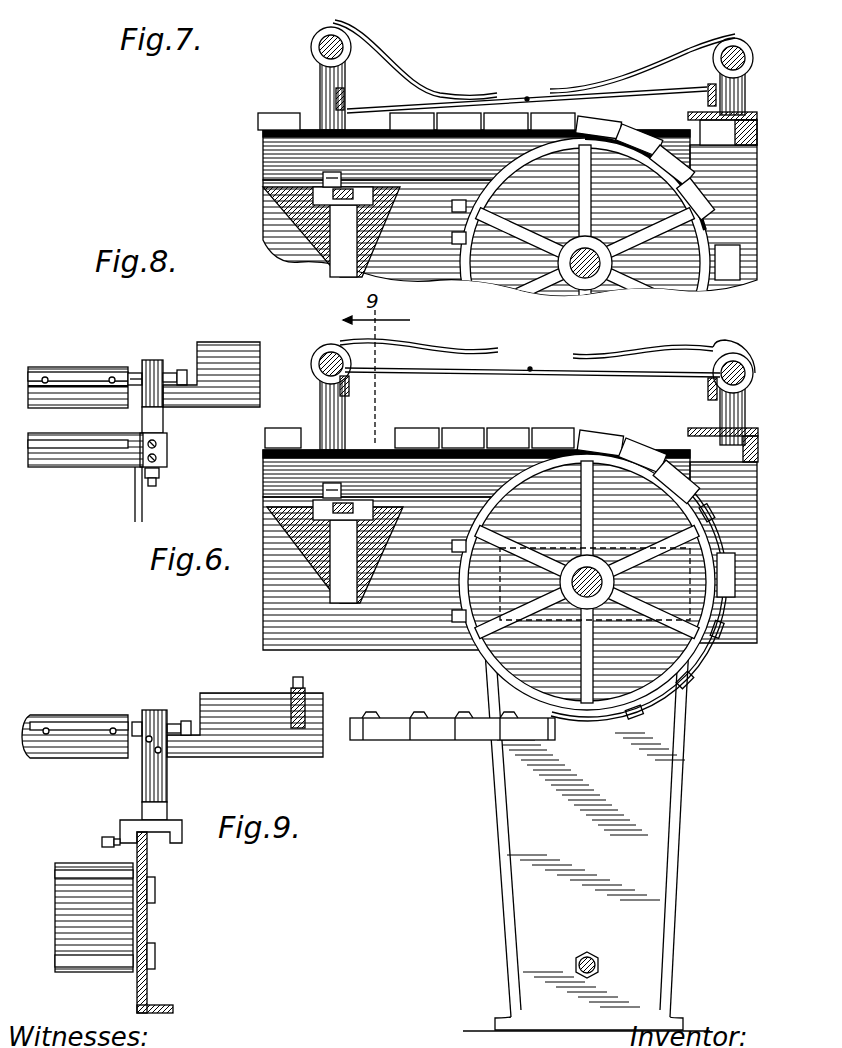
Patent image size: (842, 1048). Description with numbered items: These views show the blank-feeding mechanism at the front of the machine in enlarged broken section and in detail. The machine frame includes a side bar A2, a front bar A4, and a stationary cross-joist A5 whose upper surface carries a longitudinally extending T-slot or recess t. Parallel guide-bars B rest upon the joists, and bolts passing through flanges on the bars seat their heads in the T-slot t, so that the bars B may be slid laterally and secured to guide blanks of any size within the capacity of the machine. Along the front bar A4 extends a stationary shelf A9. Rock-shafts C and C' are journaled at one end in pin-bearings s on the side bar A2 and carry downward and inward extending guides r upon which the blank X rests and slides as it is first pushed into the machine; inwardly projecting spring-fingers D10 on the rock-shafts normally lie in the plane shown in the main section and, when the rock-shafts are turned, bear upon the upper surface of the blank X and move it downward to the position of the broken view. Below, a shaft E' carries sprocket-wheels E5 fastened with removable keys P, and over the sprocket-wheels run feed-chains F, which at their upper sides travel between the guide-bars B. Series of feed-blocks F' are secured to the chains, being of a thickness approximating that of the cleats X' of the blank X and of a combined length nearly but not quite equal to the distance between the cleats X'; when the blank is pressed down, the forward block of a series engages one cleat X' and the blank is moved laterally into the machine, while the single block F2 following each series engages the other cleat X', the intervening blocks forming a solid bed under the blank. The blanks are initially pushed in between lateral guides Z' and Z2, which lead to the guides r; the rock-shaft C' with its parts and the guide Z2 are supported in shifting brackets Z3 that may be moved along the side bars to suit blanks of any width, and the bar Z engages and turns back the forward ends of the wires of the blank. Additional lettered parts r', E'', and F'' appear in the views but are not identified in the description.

In FIG. 7, the guide-bar B is at (268, 155).
In FIG. 6, the guide-bar B is at (310, 458).
In FIG. 7, the side bar A2 is at (742, 188).
In FIG. 6, the side bar A2 is at (365, 632).
In FIG. 8, the side bar A2 is at (140, 500).
In FIG. 9, the side bar A2 is at (148, 918).
In FIG. 7, the front bar A4 is at (752, 136).
In FIG. 8, the front bar A4 is at (108, 468).
In FIG. 7, the cross-joist A5 is at (358, 220).
In FIG. 6, the cross-joist A5 is at (320, 560).
In FIG. 9, the cross-joist A5 is at (73, 868).
In FIG. 7, the stationary shelf A9 is at (745, 113).
In FIG. 6, the stationary shelf A9 is at (723, 445).
In FIG. 8, the stationary shelf A9 is at (70, 445).
In FIG. 7, the rock-shaft C is at (747, 76).
In FIG. 6, the rock-shaft C is at (747, 399).
In FIG. 8, the rock-shaft C is at (78, 373).
In FIG. 7, the rock-shaft C' is at (316, 70).
In FIG. 6, the rock-shaft C' is at (315, 391).
In FIG. 9, the rock-shaft C' is at (75, 723).
In FIG. 7, the guide r is at (526, 84).
In FIG. 6, the guide r is at (351, 399).
In FIG. 8, the guide r is at (69, 415).
In FIG. 9, the guide r is at (59, 774).
In FIG. 6, the pulley bracket r' is at (697, 400).
In FIG. 7, the blank X is at (516, 85).
In FIG. 6, the blank X is at (518, 357).
In FIG. 7, the cleat X' is at (527, 114).
In FIG. 6, the cleat X' is at (532, 386).
In FIG. 7, the spring-finger D10 is at (449, 88).
In FIG. 6, the spring-finger D10 is at (462, 352).
In FIG. 7, the shaft E' is at (581, 263).
In FIG. 6, the shaft E' is at (583, 582).
In FIG. 6, the wheel blocks E'' is at (482, 451).
In FIG. 7, the sprocket-wheel E5 is at (440, 236).
In FIG. 6, the sprocket-wheel E5 is at (665, 682).
In FIG. 7, the removable key P is at (578, 255).
In FIG. 6, the removable key P is at (590, 570).
In FIG. 7, the T-slot t is at (380, 157).
In FIG. 6, the T-slot t is at (352, 495).
In FIG. 6, the feed-chain F is at (452, 716).
In FIG. 6, the feed-block F' is at (450, 759).
In FIG. 7, the track block F'' is at (486, 161).
In FIG. 7, the single block F2 is at (728, 258).
In FIG. 6, the single block F2 is at (738, 575).
In FIG. 8, the pin-bearing s is at (138, 370).
In FIG. 9, the pin-bearing s is at (140, 718).
In FIG. 9, the bar Z is at (283, 695).
In FIG. 8, the lateral guide Z' is at (211, 360).
In FIG. 9, the lateral guide Z2 is at (224, 698).
In FIG. 9, the shifting bracket Z3 is at (152, 808).